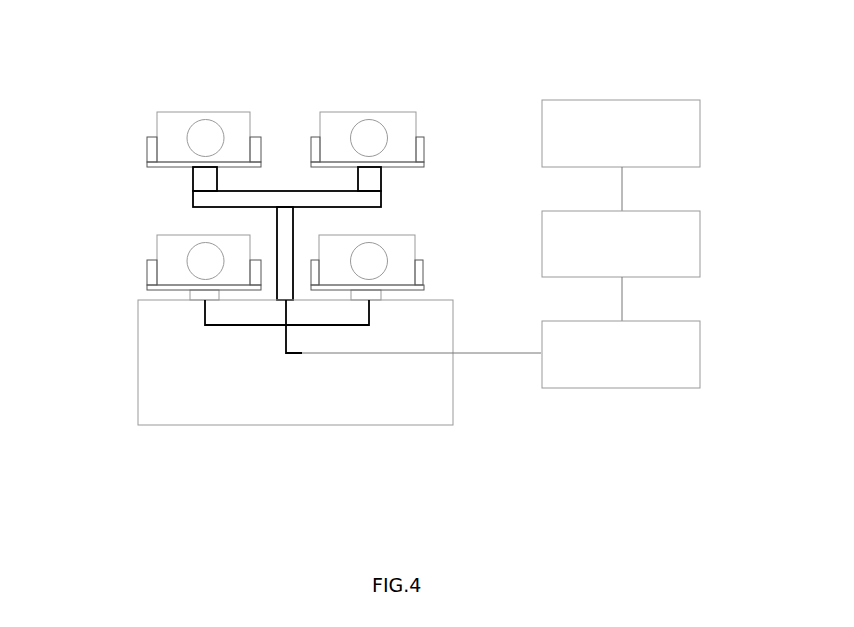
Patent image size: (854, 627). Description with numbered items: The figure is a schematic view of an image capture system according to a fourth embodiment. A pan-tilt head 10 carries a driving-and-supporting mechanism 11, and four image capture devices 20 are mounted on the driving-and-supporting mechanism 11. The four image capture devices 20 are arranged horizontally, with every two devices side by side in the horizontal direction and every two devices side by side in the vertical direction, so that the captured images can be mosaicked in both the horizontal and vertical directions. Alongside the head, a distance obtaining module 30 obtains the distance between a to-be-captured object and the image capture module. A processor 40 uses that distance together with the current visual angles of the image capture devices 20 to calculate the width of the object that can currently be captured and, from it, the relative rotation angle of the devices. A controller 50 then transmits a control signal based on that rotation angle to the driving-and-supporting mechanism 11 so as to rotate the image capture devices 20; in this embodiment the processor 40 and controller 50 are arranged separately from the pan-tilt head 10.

The pan-tilt head 10 is at (138, 333).
The driving-and-supporting mechanism 11 is at (205, 199).
The image capture device 20 is at (342, 120).
The distance obtaining module 30 is at (645, 100).
The processor 40 is at (700, 232).
The controller 50 is at (700, 353).